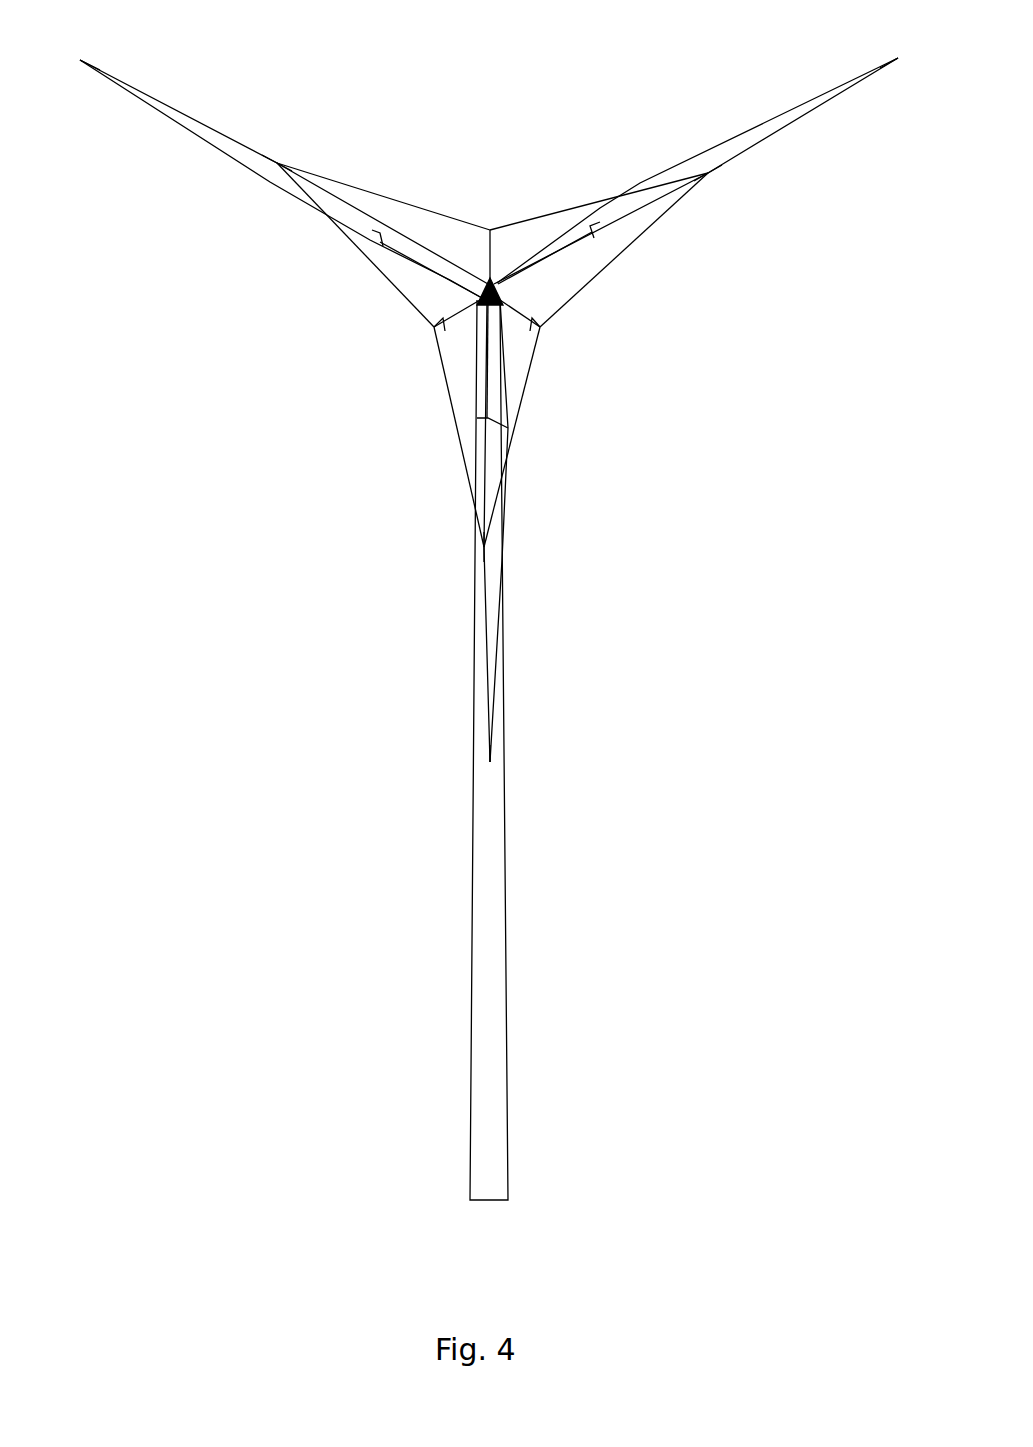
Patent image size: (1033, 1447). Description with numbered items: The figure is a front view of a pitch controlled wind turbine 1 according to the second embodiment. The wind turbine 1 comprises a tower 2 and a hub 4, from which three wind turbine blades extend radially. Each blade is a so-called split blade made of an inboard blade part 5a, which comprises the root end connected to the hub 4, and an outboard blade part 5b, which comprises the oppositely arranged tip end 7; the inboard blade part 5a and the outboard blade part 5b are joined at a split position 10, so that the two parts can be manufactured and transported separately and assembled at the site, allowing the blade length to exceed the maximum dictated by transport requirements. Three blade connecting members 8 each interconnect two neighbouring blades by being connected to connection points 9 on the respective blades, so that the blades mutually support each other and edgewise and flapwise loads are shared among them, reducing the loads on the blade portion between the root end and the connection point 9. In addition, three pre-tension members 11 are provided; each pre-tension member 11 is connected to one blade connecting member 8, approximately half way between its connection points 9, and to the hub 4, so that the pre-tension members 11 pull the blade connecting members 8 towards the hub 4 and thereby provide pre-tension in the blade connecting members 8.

The wind turbine 1 is at (270, 750).
The tower 2 is at (483, 950).
The hub 4 is at (486, 286).
The inboard blade part 5a is at (410, 250).
The outboard blade part 5b is at (155, 107).
The tip end 7 is at (80, 60).
The blade connecting member 8 is at (385, 195).
The connection point 9 is at (277, 163).
The split position 10 is at (377, 235).
The pre-tension member 11 is at (494, 272).